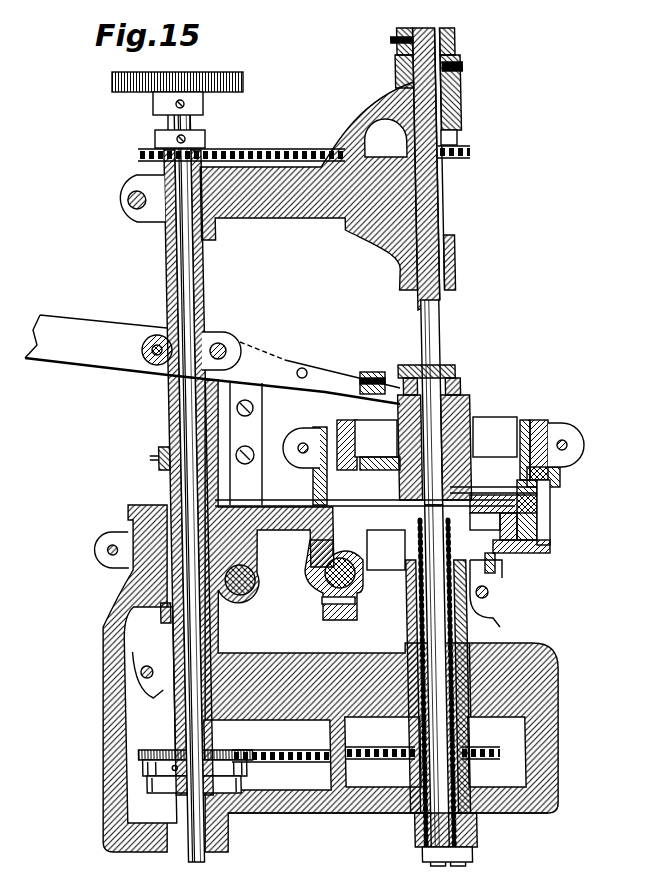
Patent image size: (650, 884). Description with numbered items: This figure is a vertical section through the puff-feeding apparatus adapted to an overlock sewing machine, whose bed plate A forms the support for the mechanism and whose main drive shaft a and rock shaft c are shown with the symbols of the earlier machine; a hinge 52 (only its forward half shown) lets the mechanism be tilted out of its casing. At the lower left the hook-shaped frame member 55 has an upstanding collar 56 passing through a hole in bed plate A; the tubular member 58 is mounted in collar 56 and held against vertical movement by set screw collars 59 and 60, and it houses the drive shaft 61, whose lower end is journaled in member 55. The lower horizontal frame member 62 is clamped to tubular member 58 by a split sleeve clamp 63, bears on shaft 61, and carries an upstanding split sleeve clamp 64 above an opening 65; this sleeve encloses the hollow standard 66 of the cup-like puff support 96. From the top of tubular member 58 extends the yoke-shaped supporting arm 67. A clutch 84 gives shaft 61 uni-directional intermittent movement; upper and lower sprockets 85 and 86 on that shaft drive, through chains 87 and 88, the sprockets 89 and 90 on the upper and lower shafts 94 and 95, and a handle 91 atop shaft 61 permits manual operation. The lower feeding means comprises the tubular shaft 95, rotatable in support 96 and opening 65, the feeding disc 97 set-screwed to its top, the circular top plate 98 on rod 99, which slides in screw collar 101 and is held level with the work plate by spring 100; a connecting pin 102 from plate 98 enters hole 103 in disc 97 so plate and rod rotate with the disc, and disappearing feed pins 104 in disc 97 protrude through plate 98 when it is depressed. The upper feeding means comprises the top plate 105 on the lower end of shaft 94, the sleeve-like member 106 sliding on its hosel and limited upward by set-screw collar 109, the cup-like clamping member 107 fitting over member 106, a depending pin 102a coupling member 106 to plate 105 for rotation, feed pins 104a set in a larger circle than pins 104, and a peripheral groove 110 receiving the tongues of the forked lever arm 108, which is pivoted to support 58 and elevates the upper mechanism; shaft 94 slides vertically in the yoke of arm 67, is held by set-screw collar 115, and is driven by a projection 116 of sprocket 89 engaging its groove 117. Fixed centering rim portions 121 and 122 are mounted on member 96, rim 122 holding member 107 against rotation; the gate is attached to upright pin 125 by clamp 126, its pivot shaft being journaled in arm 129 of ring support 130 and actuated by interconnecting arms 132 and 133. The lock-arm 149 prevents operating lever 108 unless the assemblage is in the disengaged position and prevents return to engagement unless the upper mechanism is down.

The hinge 52 is at (99, 560).
The lower hook-shaped frame member 55 is at (96, 648).
The upstanding collar 56 is at (153, 490).
The tubular member 58 is at (159, 417).
The set screw collar 59 is at (149, 458).
The set screw collar 60 is at (151, 616).
The drive shaft 61 is at (181, 298).
The lower horizontal frame member 62 is at (380, 815).
The split sleeve clamp 63 is at (157, 700).
The upstanding split sleeve clamp 64 is at (443, 622).
The opening 65 is at (458, 718).
The hollow standard 66 is at (396, 645).
The yoke-shaped supporting arm 67 is at (308, 216).
The clutch 84 is at (135, 784).
The upper sprocket 85 is at (207, 140).
The lower sprocket 86 is at (226, 752).
The chain 87 is at (274, 150).
The chain 88 is at (290, 751).
The upper sprocket 89 is at (460, 143).
The lower sprocket 90 is at (475, 768).
The handle 91 is at (243, 78).
The upper shaft 94 is at (431, 349).
The lower shaft 95 is at (425, 751).
The cup-like puff support 96 is at (390, 570).
The feeding disc 97 is at (325, 565).
The circular top plate 98 is at (520, 518).
The rod 99 is at (415, 600).
The spring 100 is at (461, 831).
The screw collar 101 is at (456, 857).
The connecting pin 102 is at (496, 522).
The depending pin 102a is at (495, 437).
The hole 103 is at (530, 536).
The disappearing feed pins 104 is at (322, 506).
The disappearing feed pins 104a is at (586, 470).
The circular top plate 105 is at (549, 491).
The sleeve-like member 106 is at (462, 414).
The cup-like clamping member 107 is at (528, 422).
The lever arm 108 is at (304, 368).
The set-screw collar 109 is at (448, 368).
The peripheral groove 110 is at (454, 394).
The set-screw collar 115 is at (454, 38).
The projection 116 is at (439, 118).
The groove 117 is at (439, 206).
The fixed rim portion 121 is at (380, 421).
The fixed rim portion 122 is at (548, 432).
The upright pin 125 is at (582, 441).
The clamp 126 is at (568, 448).
The arm 129 is at (543, 550).
The ring support 130 is at (497, 602).
The interconnecting arm 132 is at (530, 560).
The interconnecting arm 133 is at (494, 572).
The lock-arm 149 is at (258, 445).
The bed plate A is at (290, 530).
The main drive shaft a is at (322, 585).
The rock shaft c is at (232, 592).